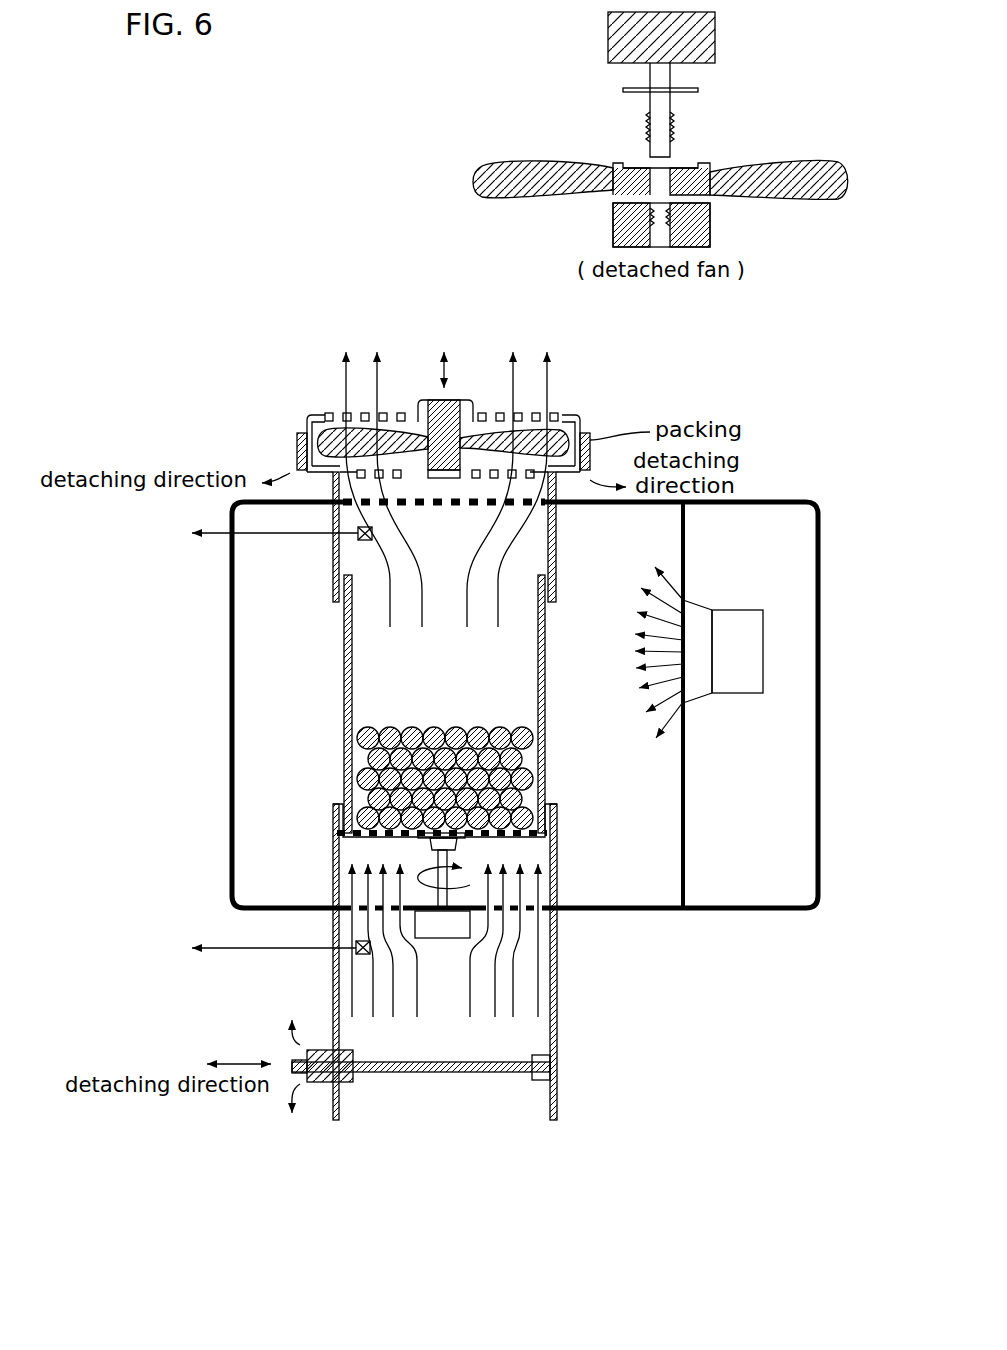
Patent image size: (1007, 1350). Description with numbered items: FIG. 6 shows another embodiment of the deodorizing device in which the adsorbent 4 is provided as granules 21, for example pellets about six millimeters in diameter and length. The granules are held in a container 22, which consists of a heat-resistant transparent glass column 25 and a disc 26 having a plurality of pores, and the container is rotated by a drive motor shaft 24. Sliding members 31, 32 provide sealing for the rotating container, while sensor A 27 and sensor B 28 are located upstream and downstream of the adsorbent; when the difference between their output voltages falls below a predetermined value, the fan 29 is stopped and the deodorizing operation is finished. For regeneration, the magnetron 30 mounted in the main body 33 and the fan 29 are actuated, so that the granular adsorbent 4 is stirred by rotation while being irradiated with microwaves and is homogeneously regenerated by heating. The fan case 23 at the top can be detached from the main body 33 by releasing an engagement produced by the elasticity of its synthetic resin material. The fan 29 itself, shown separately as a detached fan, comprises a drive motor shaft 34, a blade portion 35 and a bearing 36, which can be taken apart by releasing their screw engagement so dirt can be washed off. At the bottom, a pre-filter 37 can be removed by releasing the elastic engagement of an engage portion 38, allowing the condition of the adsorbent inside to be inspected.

The adsorbent 4 is at (395, 761).
The granules 21 is at (360, 740).
The container 22 is at (545, 702).
The fan case 23 is at (308, 420).
The drive motor shaft 24 is at (447, 895).
The heat-resistant transparent glass column 25 is at (344, 657).
The disc 26 is at (385, 836).
The sensor A 27 is at (358, 955).
The sensor B 28 is at (358, 542).
The fan 29 is at (332, 440).
The magnetron 30 is at (745, 650).
The sliding member 31 is at (333, 597).
The sliding member 32 is at (340, 818).
The main body 33 is at (805, 502).
The drive motor shaft 34 is at (662, 103).
The blade portion 35 is at (506, 172).
The bearing 36 is at (710, 220).
The pre-filter 37 is at (403, 1073).
The engage portion 38 is at (323, 1083).